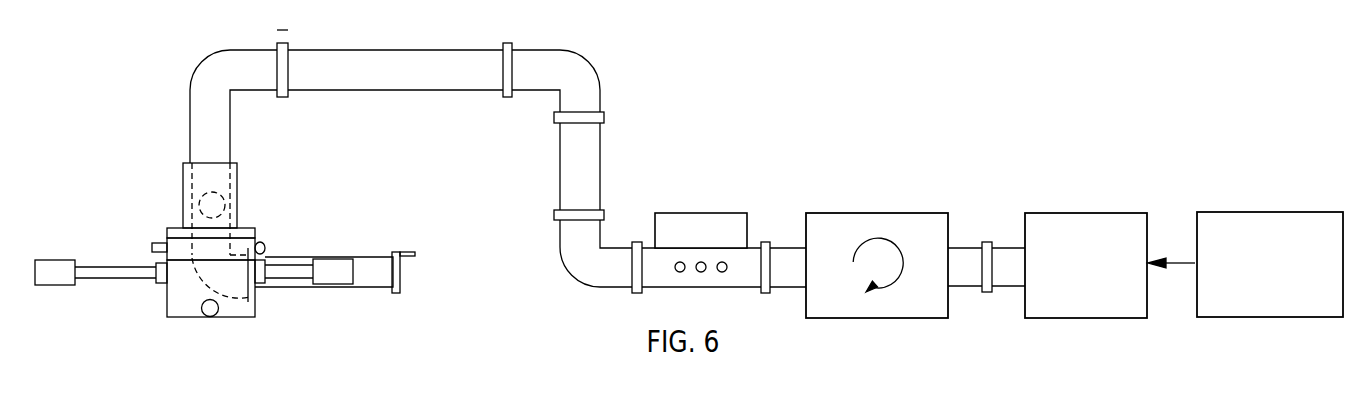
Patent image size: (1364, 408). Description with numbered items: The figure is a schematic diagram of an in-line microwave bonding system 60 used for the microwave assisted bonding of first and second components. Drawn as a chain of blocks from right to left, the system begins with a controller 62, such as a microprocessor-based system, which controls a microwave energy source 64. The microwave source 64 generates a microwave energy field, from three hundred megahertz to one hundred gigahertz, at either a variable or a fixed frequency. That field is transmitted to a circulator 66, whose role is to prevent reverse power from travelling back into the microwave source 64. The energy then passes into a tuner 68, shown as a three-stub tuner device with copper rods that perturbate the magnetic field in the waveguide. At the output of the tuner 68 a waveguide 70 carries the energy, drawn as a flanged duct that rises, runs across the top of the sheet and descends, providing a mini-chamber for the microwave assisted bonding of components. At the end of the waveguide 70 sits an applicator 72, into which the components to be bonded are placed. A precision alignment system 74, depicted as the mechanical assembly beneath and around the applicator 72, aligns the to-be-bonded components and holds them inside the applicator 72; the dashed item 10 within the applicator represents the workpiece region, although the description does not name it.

The substrate 10 is at (230, 192).
The in-line microwave bonding system 60 is at (750, 160).
The controller 62 is at (1245, 212).
The microwave energy source 64 is at (1098, 212).
The circulator 66 is at (895, 213).
The tuner 68 is at (678, 213).
The waveguide 70 is at (415, 57).
The applicator 72 is at (233, 163).
The precision alignment system 74 is at (138, 224).